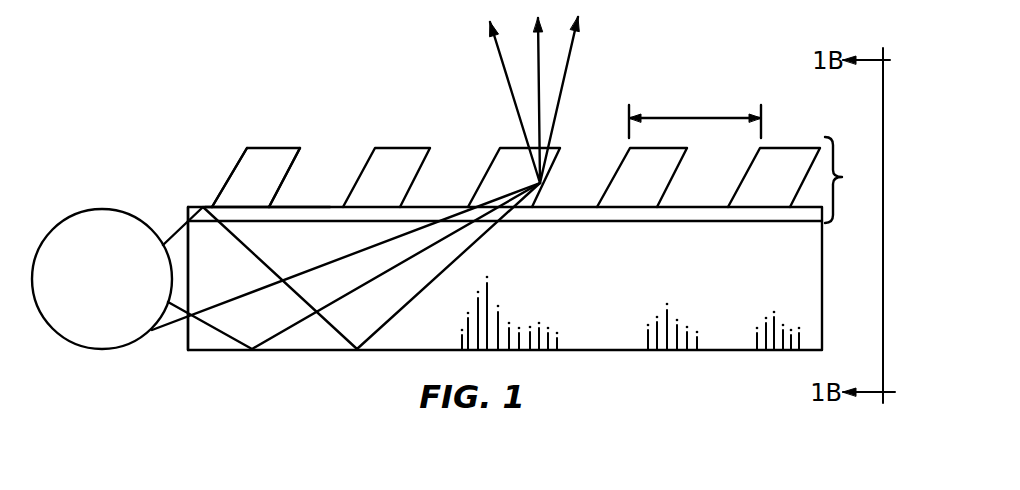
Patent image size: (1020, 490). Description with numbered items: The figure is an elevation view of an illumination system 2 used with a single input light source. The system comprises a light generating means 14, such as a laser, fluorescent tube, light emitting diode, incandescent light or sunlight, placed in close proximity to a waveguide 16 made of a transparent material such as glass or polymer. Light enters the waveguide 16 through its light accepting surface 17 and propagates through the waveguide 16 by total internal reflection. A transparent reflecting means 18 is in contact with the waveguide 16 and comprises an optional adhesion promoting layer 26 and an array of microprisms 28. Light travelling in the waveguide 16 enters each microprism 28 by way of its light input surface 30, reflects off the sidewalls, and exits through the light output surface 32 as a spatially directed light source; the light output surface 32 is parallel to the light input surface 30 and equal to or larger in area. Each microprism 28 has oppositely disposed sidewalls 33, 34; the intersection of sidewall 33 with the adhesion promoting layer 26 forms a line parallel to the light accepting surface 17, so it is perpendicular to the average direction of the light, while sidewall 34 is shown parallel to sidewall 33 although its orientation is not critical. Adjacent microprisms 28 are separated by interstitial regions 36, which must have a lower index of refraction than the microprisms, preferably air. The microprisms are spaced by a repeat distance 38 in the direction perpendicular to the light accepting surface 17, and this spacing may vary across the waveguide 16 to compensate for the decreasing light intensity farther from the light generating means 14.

The illumination system 2 is at (756, 62).
The light generating means 14 is at (108, 208).
The waveguide 16 is at (730, 346).
The light accepting surface 17 is at (186, 343).
The transparent reflecting means 18 is at (842, 177).
The adhesion promoting layer 26 is at (770, 215).
The microprism 28 is at (797, 147).
The light input surface 30 is at (243, 205).
The light output surface 32 is at (292, 143).
The sidewall 33 is at (283, 172).
The sidewall 34 is at (240, 160).
The interstitial region 36 is at (347, 155).
The repeat distance 38 is at (691, 118).